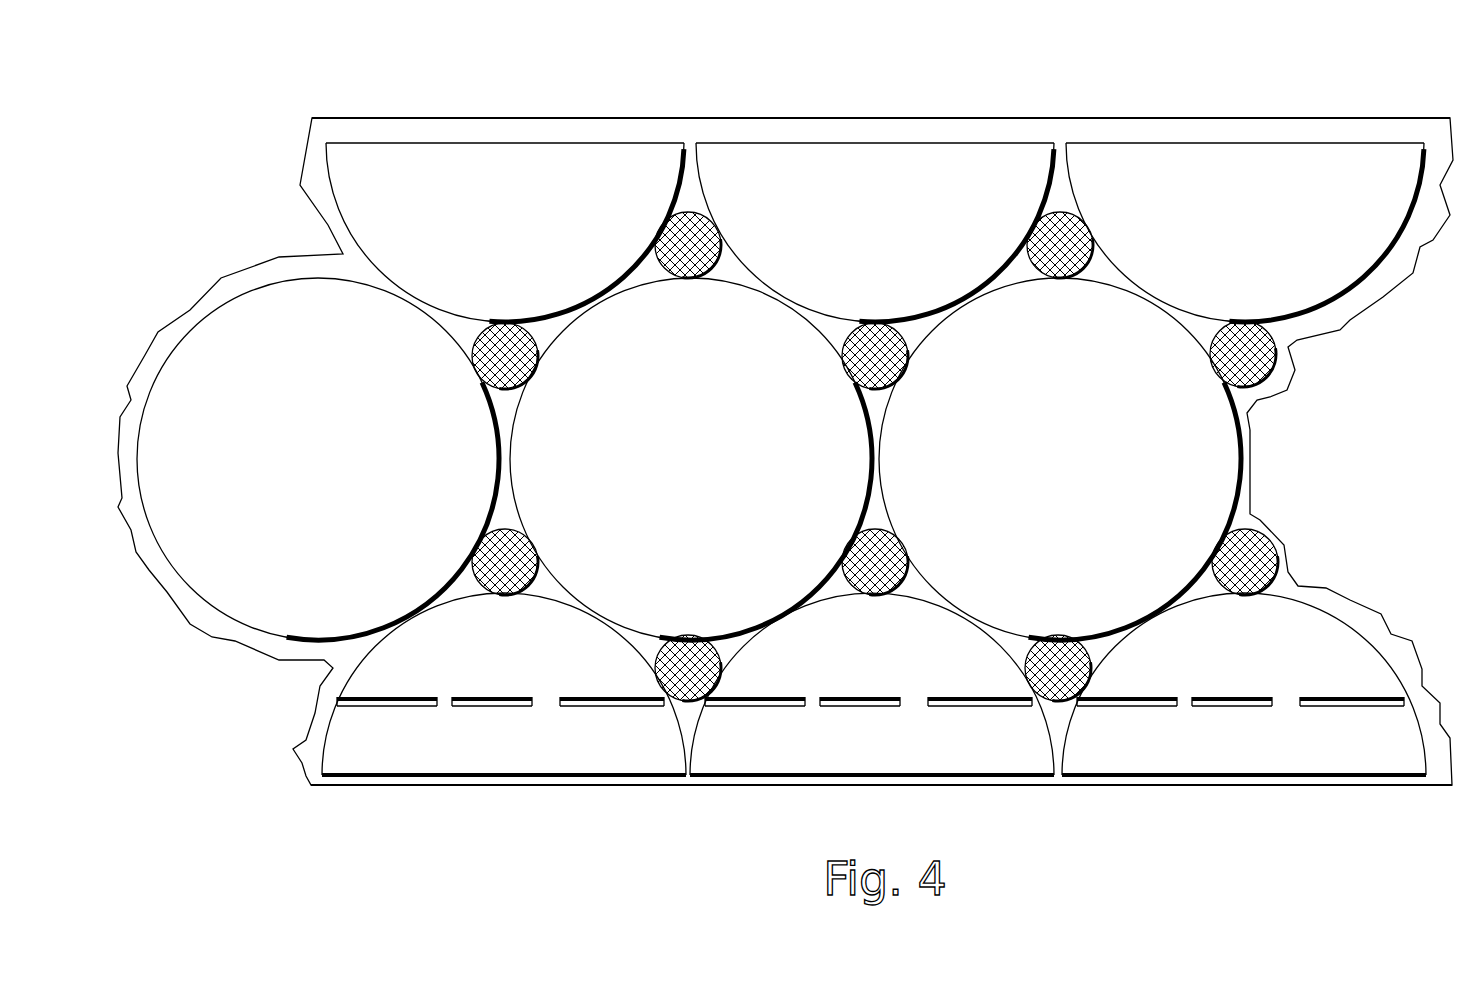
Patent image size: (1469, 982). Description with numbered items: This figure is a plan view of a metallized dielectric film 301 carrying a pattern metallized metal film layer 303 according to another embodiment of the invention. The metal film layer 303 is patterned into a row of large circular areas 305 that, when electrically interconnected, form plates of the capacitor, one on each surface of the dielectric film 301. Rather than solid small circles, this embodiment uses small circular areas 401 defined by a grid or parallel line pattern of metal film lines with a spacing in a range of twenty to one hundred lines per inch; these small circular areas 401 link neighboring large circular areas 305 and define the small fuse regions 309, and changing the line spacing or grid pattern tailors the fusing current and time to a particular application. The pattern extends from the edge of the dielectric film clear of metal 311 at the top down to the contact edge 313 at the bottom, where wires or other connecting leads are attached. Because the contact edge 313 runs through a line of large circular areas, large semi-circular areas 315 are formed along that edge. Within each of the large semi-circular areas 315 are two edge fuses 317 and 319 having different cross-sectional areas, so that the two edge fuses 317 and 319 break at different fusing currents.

The metallized dielectric film 301 is at (1348, 118).
The pattern metallized metal film layer 303 is at (940, 160).
The large circular areas 305 is at (303, 483).
The small fuse regions 309 is at (652, 227).
The edge of the dielectric film clear of metal 311 is at (598, 125).
The contact edge 313 is at (1432, 768).
The large semi-circular areas 315 is at (486, 675).
The edge fuse 317 is at (445, 708).
The edge fuse 319 is at (550, 708).
The small circular areas 401 is at (1079, 681).